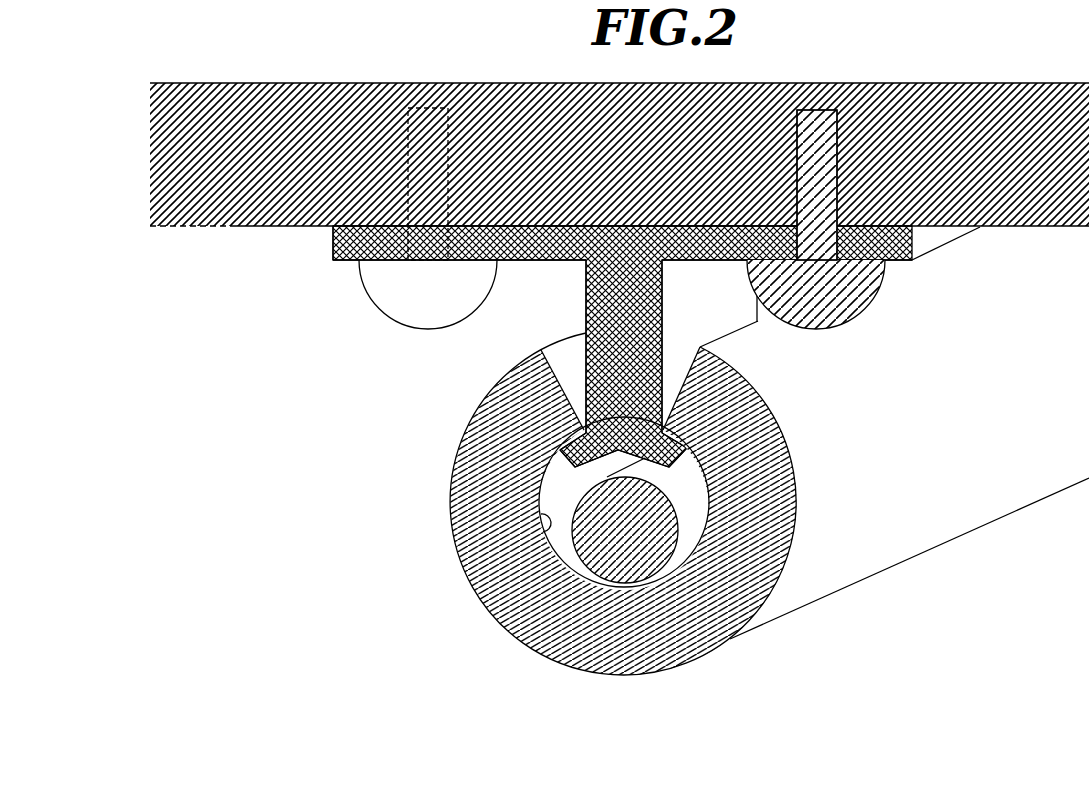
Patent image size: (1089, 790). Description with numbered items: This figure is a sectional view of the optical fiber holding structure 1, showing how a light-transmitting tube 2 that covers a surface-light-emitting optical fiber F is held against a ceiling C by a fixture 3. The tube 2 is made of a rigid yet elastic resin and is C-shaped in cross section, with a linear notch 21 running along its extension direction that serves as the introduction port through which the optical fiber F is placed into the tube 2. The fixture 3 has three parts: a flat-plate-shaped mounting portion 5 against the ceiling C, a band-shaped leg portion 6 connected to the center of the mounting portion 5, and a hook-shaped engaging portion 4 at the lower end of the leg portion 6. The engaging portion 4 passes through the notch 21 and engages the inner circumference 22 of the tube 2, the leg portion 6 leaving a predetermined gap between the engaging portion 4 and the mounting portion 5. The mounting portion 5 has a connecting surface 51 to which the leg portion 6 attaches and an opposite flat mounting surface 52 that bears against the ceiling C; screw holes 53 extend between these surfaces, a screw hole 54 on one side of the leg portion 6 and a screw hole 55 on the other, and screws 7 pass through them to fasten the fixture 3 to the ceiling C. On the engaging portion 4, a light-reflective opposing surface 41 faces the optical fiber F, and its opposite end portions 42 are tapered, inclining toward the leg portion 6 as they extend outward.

The optical fiber holding structure 1 is at (307, 500).
The light-transmitting tube 2 is at (547, 639).
The notch 21 is at (570, 356).
The inner circumference 22 is at (548, 528).
The fixture 3 is at (329, 241).
The engaging portion 4 is at (548, 432).
The opposing surface 41 is at (618, 446).
The opposite end portions 42 is at (574, 458).
The mounting portion 5 is at (733, 244).
The connecting surface 51 is at (562, 262).
The mounting surface 52 is at (626, 226).
The screw holes 53 is at (880, 200).
The screw hole 54 is at (824, 219).
The screw hole 55 is at (394, 184).
The leg portion 6 is at (598, 301).
The screws 7 is at (425, 308).
The ceiling C is at (633, 163).
The surface-light-emitting optical fiber F is at (626, 565).